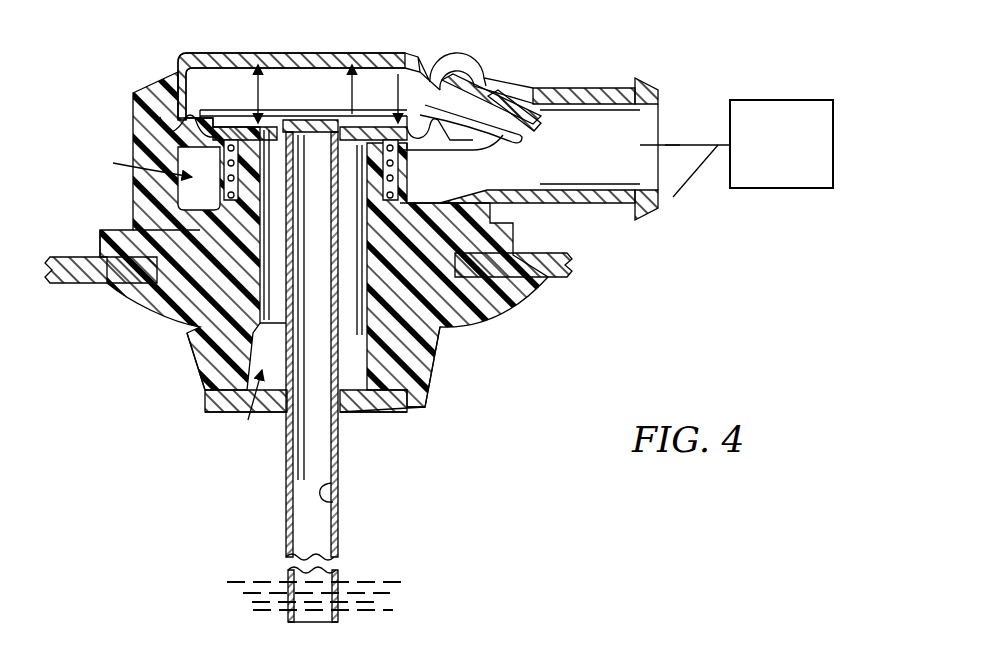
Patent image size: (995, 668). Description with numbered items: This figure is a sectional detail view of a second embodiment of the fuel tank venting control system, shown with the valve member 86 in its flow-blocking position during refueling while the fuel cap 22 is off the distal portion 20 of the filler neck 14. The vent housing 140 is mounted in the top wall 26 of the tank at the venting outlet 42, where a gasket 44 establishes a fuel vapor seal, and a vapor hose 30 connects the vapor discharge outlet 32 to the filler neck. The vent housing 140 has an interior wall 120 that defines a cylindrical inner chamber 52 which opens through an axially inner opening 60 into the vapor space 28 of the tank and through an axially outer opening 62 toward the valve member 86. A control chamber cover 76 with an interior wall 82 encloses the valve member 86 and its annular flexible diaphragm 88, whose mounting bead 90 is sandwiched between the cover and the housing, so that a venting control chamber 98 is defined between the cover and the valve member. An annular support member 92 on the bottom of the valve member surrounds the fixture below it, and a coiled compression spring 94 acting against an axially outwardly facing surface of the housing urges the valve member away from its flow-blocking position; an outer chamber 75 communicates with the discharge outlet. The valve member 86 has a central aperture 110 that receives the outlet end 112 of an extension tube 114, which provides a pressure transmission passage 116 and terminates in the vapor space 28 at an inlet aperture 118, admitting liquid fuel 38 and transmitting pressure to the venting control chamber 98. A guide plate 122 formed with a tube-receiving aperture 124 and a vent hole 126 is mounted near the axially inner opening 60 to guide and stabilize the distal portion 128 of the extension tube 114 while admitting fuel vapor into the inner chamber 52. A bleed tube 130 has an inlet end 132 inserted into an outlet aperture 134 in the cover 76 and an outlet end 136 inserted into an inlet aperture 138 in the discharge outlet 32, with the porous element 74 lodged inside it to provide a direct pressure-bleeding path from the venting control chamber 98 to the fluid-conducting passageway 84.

The filler neck 14 is at (698, 175).
The distal portion 20 is at (723, 142).
The fuel cap 22 is at (796, 100).
The top wall 26 is at (548, 278).
The vapor space 28 is at (553, 397).
The vapor hose 30 is at (671, 141).
The vapor discharge outlet 32 is at (646, 83).
The liquid fuel 38 is at (377, 582).
The venting outlet 42 is at (167, 317).
The gasket 44 is at (110, 232).
The inner chamber 52 is at (268, 344).
The axially inner opening 60 is at (258, 412).
The axially outer opening 62 is at (364, 146).
The porous element 74 is at (488, 77).
The outer chamber 75 is at (140, 166).
The control chamber cover 76 is at (395, 48).
The interior wall 82 is at (366, 68).
The fluid-conducting passageway 84 is at (590, 100).
The valve member 86 is at (230, 128).
The flexible diaphragm 88 is at (180, 66).
The mounting bead 90 is at (137, 143).
The annular support member 92 is at (473, 150).
The coiled compression spring 94 is at (399, 182).
The venting control chamber 98 is at (271, 90).
The central aperture 110 is at (330, 134).
The outlet end 112 is at (345, 70).
The extension tube 114 is at (284, 500).
The pressure transmission passage 116 is at (338, 500).
The inlet aperture 118 is at (340, 617).
The interior wall 120 is at (433, 379).
The guide plate 122 is at (380, 413).
The bottom plate 124 is at (280, 403).
The vent hole 126 is at (266, 412).
The distal portion 128 is at (342, 445).
The bleed tube 130 is at (482, 52).
The inlet end 132 is at (421, 60).
The outlet aperture 134 is at (444, 63).
The outlet end 136 is at (517, 127).
The inlet aperture 138 is at (512, 97).
The vent housing 140 is at (442, 360).